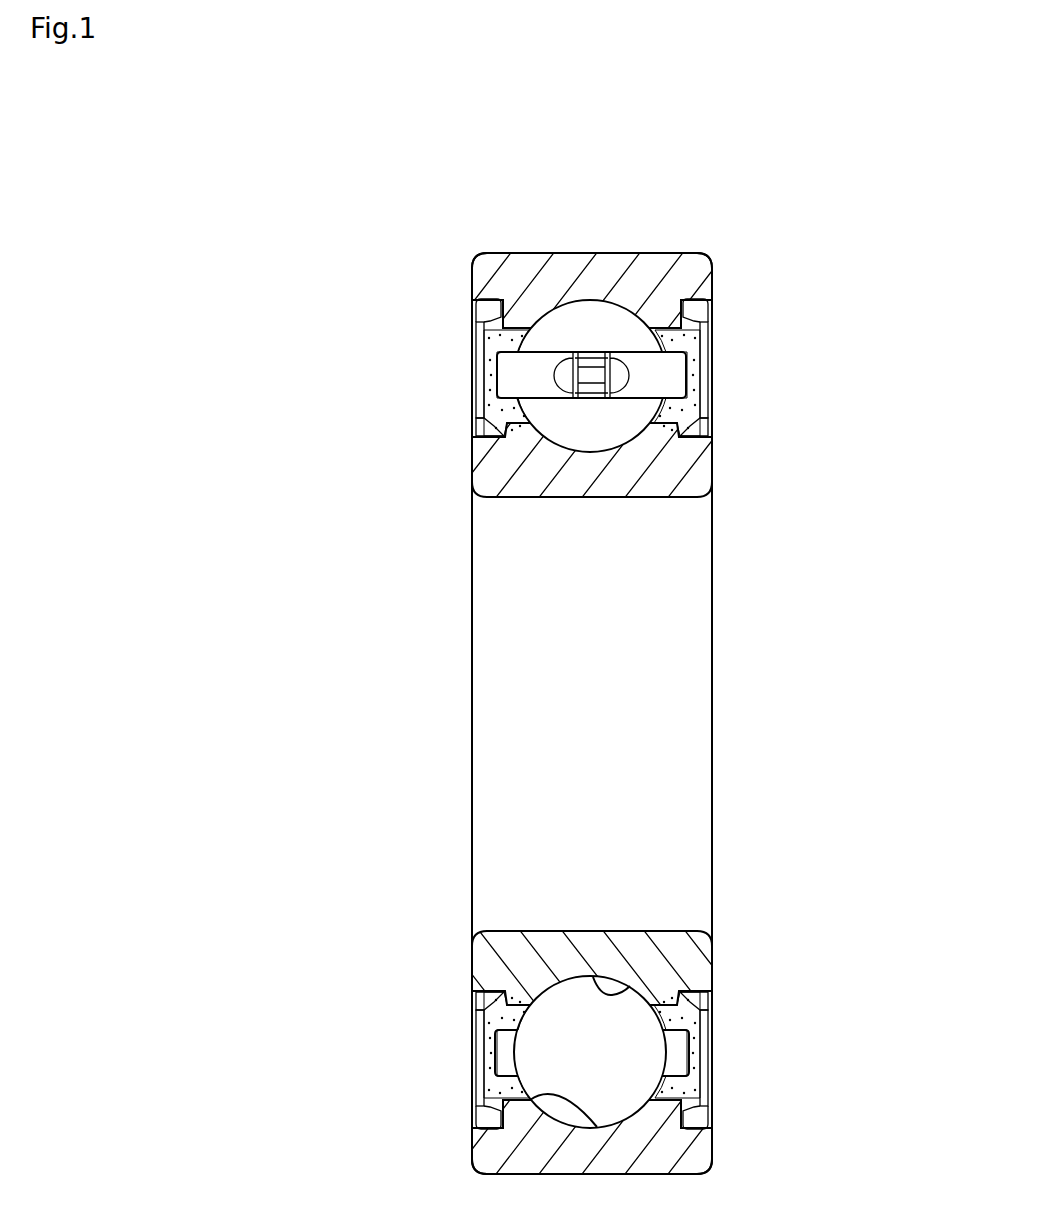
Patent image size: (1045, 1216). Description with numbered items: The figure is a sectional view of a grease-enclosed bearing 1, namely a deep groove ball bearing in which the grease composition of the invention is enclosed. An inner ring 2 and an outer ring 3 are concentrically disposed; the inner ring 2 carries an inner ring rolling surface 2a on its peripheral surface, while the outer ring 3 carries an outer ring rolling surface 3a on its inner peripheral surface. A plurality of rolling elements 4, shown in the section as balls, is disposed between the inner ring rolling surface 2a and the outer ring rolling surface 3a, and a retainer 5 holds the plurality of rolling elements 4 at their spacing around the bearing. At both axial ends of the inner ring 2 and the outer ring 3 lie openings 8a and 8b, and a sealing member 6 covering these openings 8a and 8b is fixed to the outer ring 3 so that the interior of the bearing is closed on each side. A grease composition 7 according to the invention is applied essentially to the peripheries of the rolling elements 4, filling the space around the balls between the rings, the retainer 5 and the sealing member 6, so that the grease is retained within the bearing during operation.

The grease-enclosed bearing 1 is at (730, 288).
The inner ring 2 is at (510, 468).
The inner ring rolling surface 2a is at (632, 988).
The outer ring 3 is at (503, 285).
The outer ring rolling surface 3a is at (537, 1103).
The rolling elements 4 is at (602, 1072).
The retainer 5 is at (515, 377).
The sealing member 6 is at (712, 413).
The grease composition 7 is at (712, 365).
The opening 8a is at (712, 343).
The opening 8b is at (480, 342).